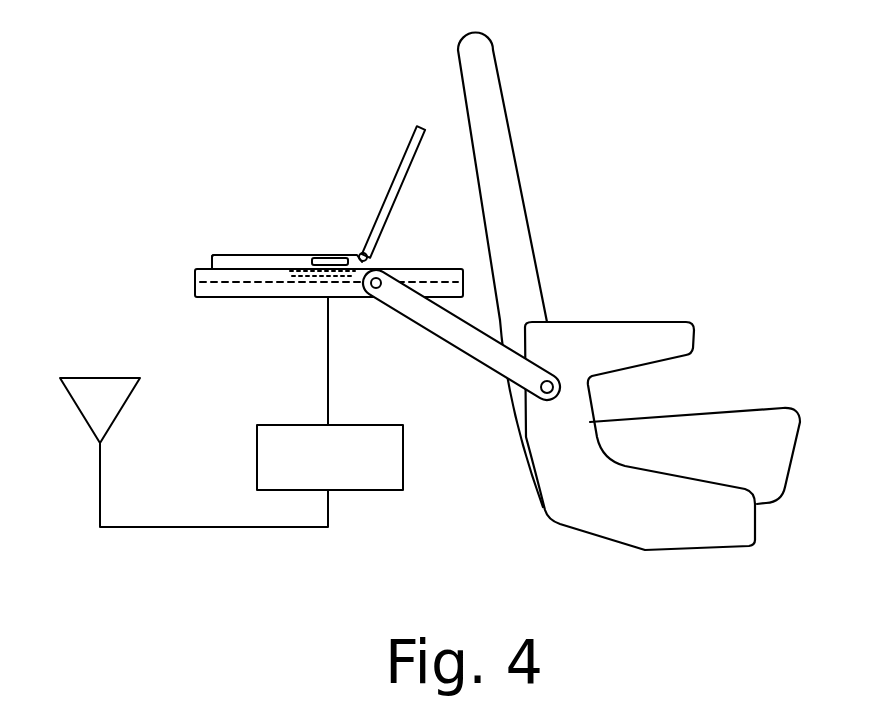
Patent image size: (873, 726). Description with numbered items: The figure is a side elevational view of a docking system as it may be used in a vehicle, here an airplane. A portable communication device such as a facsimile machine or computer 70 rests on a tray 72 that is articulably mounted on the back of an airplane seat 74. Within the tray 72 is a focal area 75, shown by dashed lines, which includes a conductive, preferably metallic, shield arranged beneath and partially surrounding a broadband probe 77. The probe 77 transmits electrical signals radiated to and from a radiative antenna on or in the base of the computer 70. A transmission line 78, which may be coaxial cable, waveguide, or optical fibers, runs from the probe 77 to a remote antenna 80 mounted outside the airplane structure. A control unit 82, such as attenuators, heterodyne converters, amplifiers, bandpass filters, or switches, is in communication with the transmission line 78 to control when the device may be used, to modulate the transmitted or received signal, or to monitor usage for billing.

The computer 70 is at (327, 255).
The tray 72 is at (195, 283).
The airplane seat 74 is at (507, 137).
The focal area 75 is at (207, 268).
The broadband probe 77 is at (298, 292).
The transmission line 78 is at (170, 530).
The remote antenna 80 is at (72, 403).
The control unit 82 is at (407, 453).